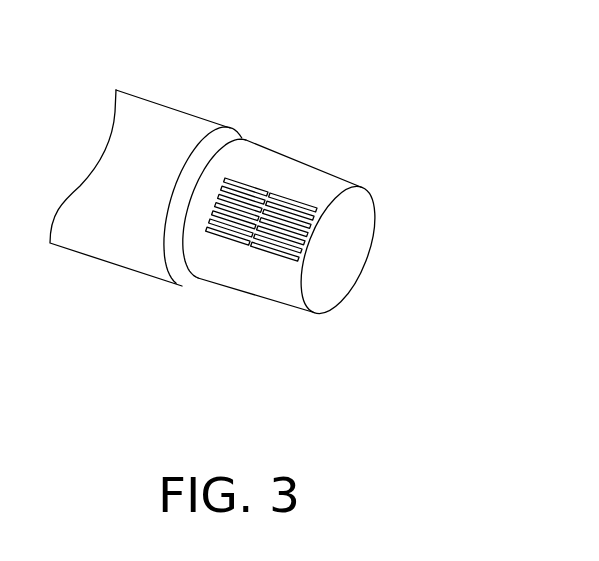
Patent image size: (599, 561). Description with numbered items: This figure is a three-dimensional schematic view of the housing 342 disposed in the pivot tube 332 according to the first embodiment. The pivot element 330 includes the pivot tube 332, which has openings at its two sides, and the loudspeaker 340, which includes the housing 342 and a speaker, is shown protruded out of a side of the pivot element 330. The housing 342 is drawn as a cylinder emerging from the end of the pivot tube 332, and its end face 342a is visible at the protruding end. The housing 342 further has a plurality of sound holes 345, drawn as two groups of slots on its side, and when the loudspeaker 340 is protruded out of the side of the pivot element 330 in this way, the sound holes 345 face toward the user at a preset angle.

The pivot element 330 is at (148, 146).
The pivot tube 332 is at (183, 122).
The loudspeaker 340 is at (324, 170).
The housing 342 is at (324, 207).
The light emitting end face 342a is at (334, 260).
The sound holes 345 is at (261, 165).